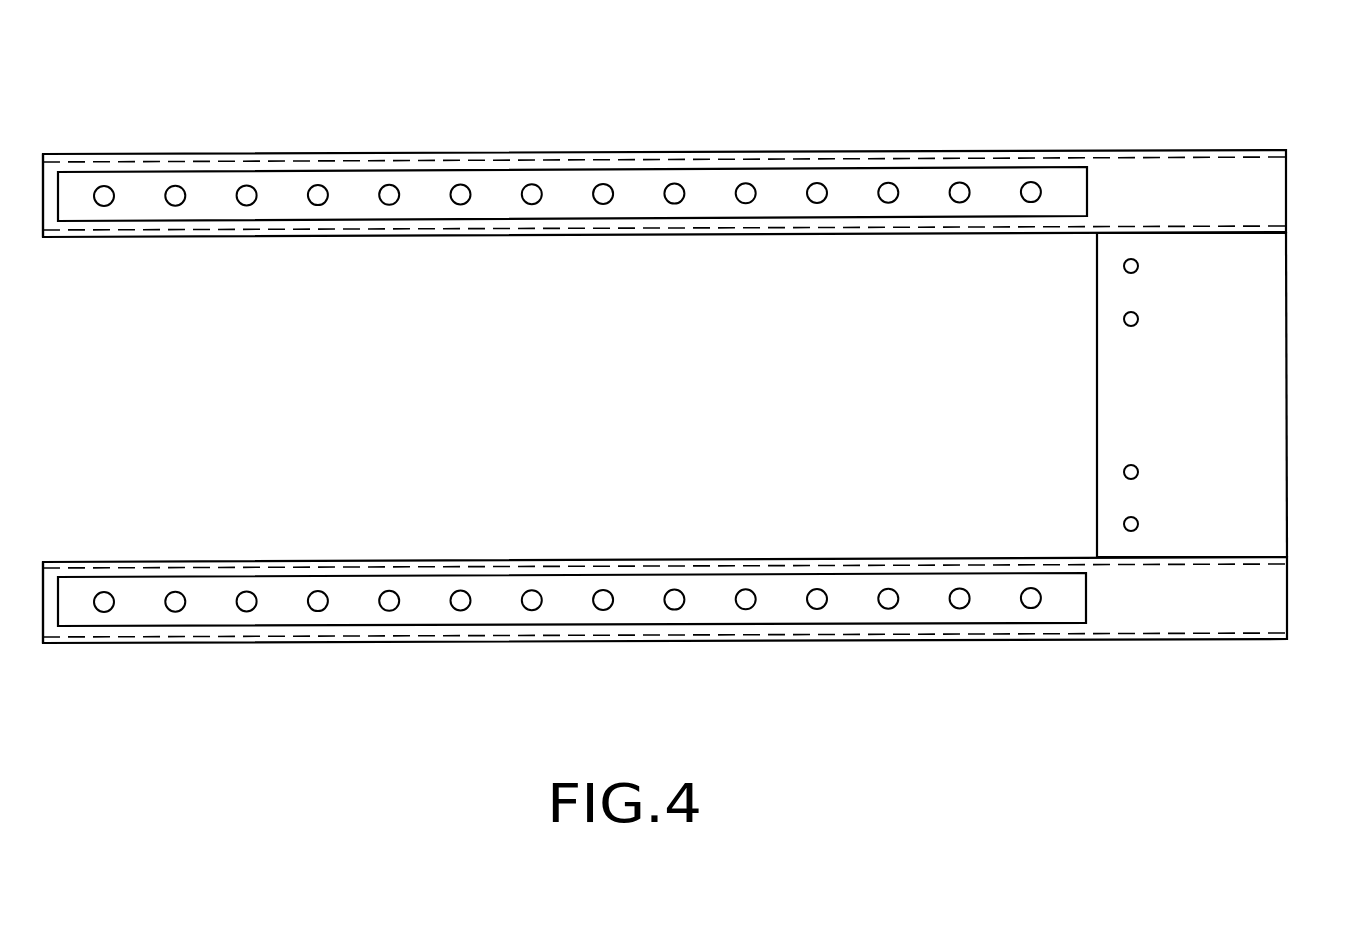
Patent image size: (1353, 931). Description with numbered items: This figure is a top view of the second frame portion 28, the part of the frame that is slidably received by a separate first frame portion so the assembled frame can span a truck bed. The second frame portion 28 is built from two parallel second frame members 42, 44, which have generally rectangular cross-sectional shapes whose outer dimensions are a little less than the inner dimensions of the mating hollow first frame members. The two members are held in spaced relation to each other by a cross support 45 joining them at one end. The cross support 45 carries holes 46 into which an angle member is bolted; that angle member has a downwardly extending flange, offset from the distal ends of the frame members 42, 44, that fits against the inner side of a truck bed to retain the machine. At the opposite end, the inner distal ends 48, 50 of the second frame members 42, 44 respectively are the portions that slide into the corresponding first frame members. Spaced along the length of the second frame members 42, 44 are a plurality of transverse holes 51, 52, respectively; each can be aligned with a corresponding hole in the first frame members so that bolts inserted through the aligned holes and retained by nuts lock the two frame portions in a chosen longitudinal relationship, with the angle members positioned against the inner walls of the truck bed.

The second frame portion 28 is at (428, 143).
The second frame member 42 is at (573, 153).
The second frame member 44 is at (799, 641).
The cross support 45 is at (1217, 317).
The holes 46 is at (1234, 395).
The inner distal end 48 is at (62, 143).
The inner distal end 50 is at (61, 652).
The transverse holes 51 is at (567, 118).
The transverse holes 52 is at (580, 673).